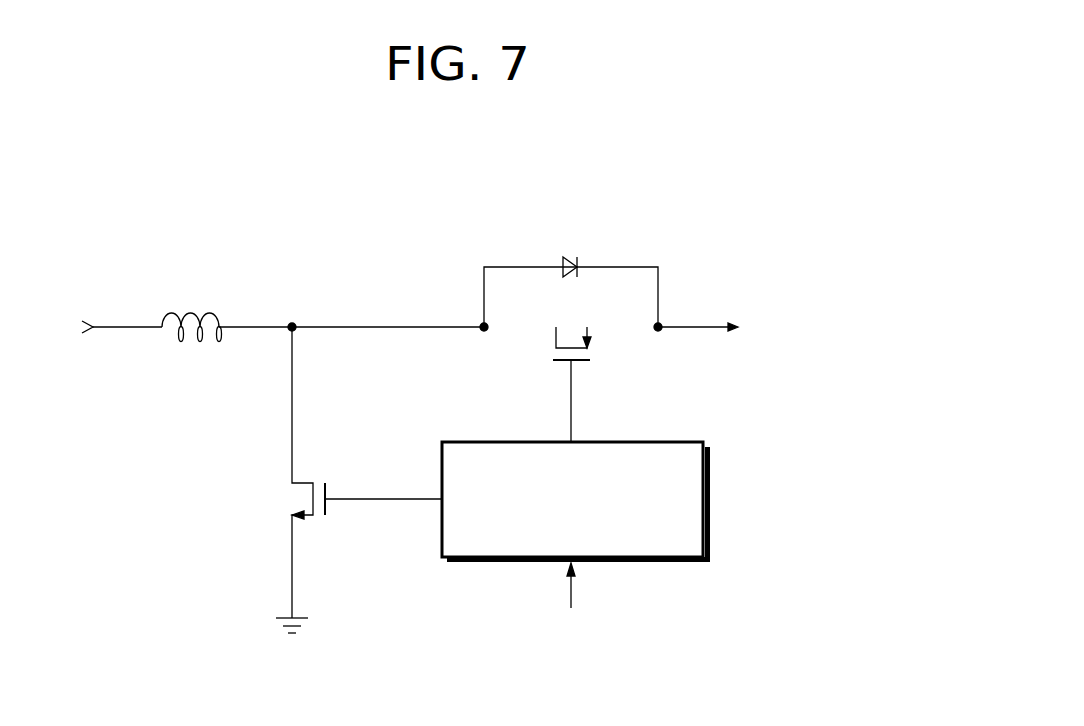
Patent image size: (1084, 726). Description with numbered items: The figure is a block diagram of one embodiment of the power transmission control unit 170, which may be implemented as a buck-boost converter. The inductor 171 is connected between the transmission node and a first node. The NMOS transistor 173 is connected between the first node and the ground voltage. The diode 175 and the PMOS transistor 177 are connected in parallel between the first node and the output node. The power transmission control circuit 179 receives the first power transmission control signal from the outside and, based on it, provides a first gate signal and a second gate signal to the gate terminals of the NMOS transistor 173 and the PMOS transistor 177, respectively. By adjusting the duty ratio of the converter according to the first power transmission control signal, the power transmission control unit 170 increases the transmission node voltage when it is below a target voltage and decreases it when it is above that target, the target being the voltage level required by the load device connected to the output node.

The power transmission control unit 170 is at (817, 176).
The inductor 171 is at (190, 310).
The NMOS transistor 173 is at (347, 472).
The diode 175 is at (571, 279).
The PMOS transistor 177 is at (572, 371).
The power transmission control circuit 179 is at (707, 496).